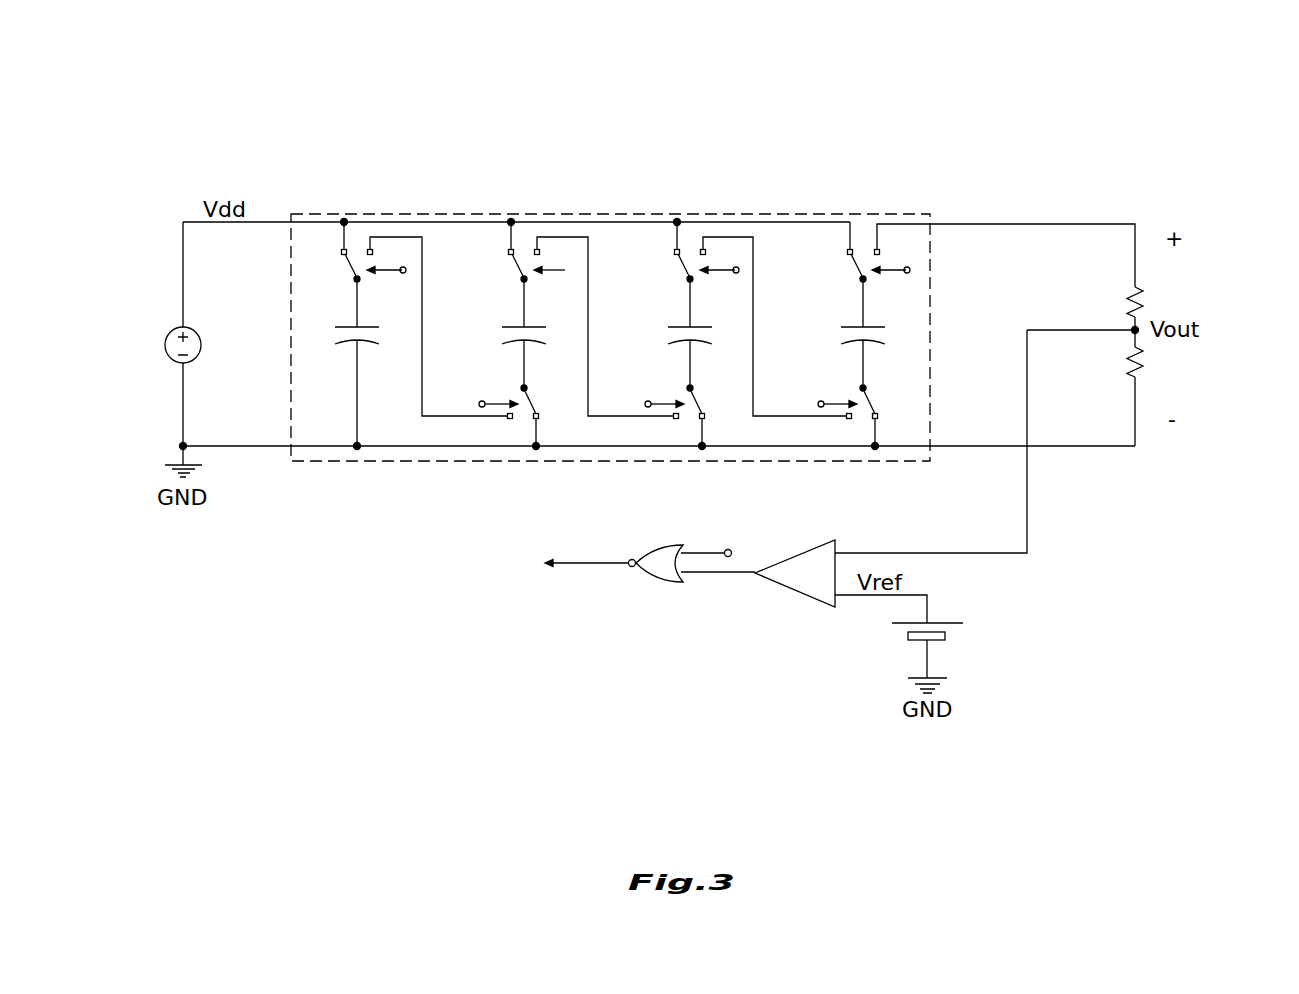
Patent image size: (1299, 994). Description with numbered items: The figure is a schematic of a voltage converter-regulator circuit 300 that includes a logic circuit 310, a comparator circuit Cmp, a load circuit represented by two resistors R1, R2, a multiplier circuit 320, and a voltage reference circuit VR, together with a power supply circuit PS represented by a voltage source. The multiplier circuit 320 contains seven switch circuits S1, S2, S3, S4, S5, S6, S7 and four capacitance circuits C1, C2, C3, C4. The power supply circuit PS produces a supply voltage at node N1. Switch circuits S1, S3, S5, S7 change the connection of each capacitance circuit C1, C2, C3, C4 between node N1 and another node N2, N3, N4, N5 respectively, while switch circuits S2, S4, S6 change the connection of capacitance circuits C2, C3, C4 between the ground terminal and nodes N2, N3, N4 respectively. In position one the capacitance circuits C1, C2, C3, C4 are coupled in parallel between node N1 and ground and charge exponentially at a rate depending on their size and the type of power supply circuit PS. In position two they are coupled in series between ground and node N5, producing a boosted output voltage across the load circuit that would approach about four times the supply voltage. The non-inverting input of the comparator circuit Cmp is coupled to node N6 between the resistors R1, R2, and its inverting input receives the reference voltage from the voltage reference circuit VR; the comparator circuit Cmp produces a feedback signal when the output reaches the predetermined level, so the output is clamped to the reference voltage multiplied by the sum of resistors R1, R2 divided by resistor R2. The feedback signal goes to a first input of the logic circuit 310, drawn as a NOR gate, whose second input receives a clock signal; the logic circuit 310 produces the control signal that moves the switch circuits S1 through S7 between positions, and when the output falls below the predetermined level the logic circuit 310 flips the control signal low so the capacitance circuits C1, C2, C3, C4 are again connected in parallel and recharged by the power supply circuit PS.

The voltage converter-regulator circuit 300 is at (1192, 148).
The logic circuit 310 is at (665, 537).
The multiplier circuit 320 is at (367, 209).
The power supply circuit PS is at (194, 330).
The switch circuit S1 is at (345, 267).
The switch circuit S2 is at (533, 394).
The switch circuit S3 is at (510, 267).
The switch circuit S4 is at (700, 394).
The switch circuit S5 is at (676, 267).
The switch circuit S6 is at (874, 394).
The switch circuit S7 is at (850, 267).
The capacitance circuit C1 is at (340, 321).
The capacitance circuit C2 is at (510, 321).
The capacitance circuit C3 is at (676, 321).
The capacitance circuit C4 is at (850, 321).
The node N1 is at (268, 228).
The node N2 is at (428, 356).
The node N3 is at (595, 356).
The node N4 is at (763, 356).
The node N5 is at (963, 232).
The node N6 is at (965, 546).
The resistor R1 is at (1131, 287).
The resistor R2 is at (1131, 378).
The comparator circuit Cmp is at (835, 536).
The voltage reference circuit VR is at (950, 618).